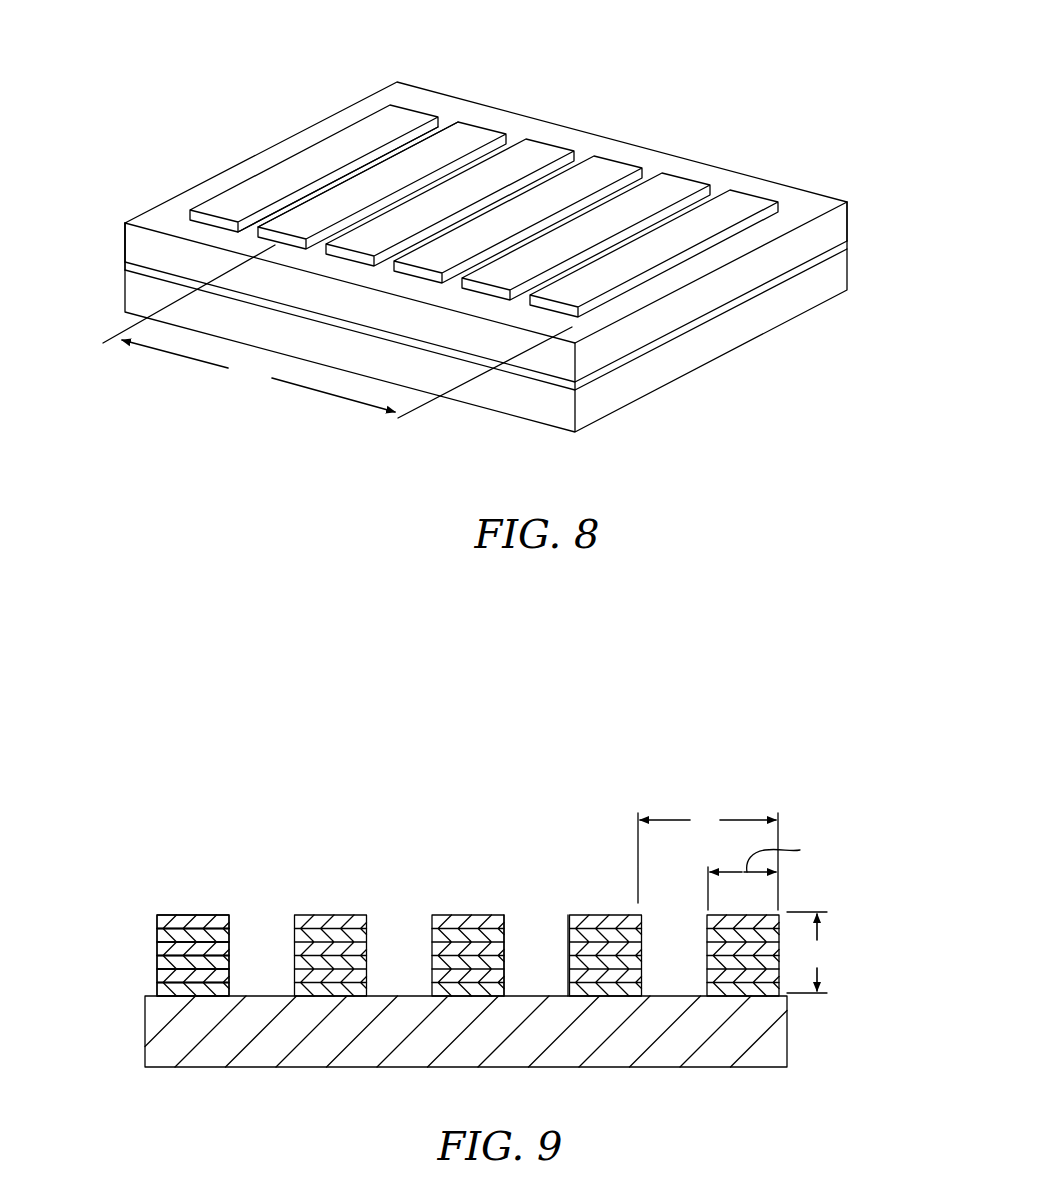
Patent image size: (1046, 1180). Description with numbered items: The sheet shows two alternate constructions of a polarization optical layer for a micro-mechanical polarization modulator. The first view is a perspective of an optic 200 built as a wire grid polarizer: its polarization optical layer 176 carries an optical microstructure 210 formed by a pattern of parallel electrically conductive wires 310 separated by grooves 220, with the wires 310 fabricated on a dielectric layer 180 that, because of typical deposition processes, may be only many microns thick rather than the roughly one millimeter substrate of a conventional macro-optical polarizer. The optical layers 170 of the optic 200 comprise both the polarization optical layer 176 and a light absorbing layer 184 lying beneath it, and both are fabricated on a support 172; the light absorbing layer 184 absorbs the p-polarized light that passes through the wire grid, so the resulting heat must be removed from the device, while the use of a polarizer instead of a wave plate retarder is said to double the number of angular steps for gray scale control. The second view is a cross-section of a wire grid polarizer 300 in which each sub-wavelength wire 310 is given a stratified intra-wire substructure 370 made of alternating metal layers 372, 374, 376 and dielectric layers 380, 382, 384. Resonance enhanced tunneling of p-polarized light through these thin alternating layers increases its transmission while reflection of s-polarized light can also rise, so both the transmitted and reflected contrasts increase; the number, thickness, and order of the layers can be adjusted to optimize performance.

In FIG. 8, the optic 200 is at (272, 78).
In FIG. 8, the wires 310 is at (407, 118).
In FIG. 9, the wires 310 is at (454, 904).
In FIG. 8, the grooves 220 is at (512, 138).
In FIG. 9, the grooves 220 is at (553, 955).
In FIG. 8, the optical microstructure 210 is at (717, 190).
In FIG. 8, the dielectric layer 180 is at (758, 188).
In FIG. 9, the dielectric layer 180 is at (156, 1031).
In FIG. 8, the optical layers 170 is at (120, 224).
In FIG. 8, the polarization optical layer 176 is at (850, 203).
In FIG. 8, the light absorbing layer 184 is at (849, 246).
In FIG. 8, the support 172 is at (790, 308).
In FIG. 9, the wire grid polarizer 300 is at (246, 832).
In FIG. 9, the stratified intra-wire substructure 370 is at (509, 995).
In FIG. 9, the metal layer 372 is at (198, 918).
In FIG. 9, the dielectric layer 380 is at (223, 935).
In FIG. 9, the metal layer 374 is at (157, 950).
In FIG. 9, the dielectric layer 382 is at (223, 965).
In FIG. 9, the metal layer 376 is at (157, 980).
In FIG. 9, the dielectric layer 384 is at (218, 992).